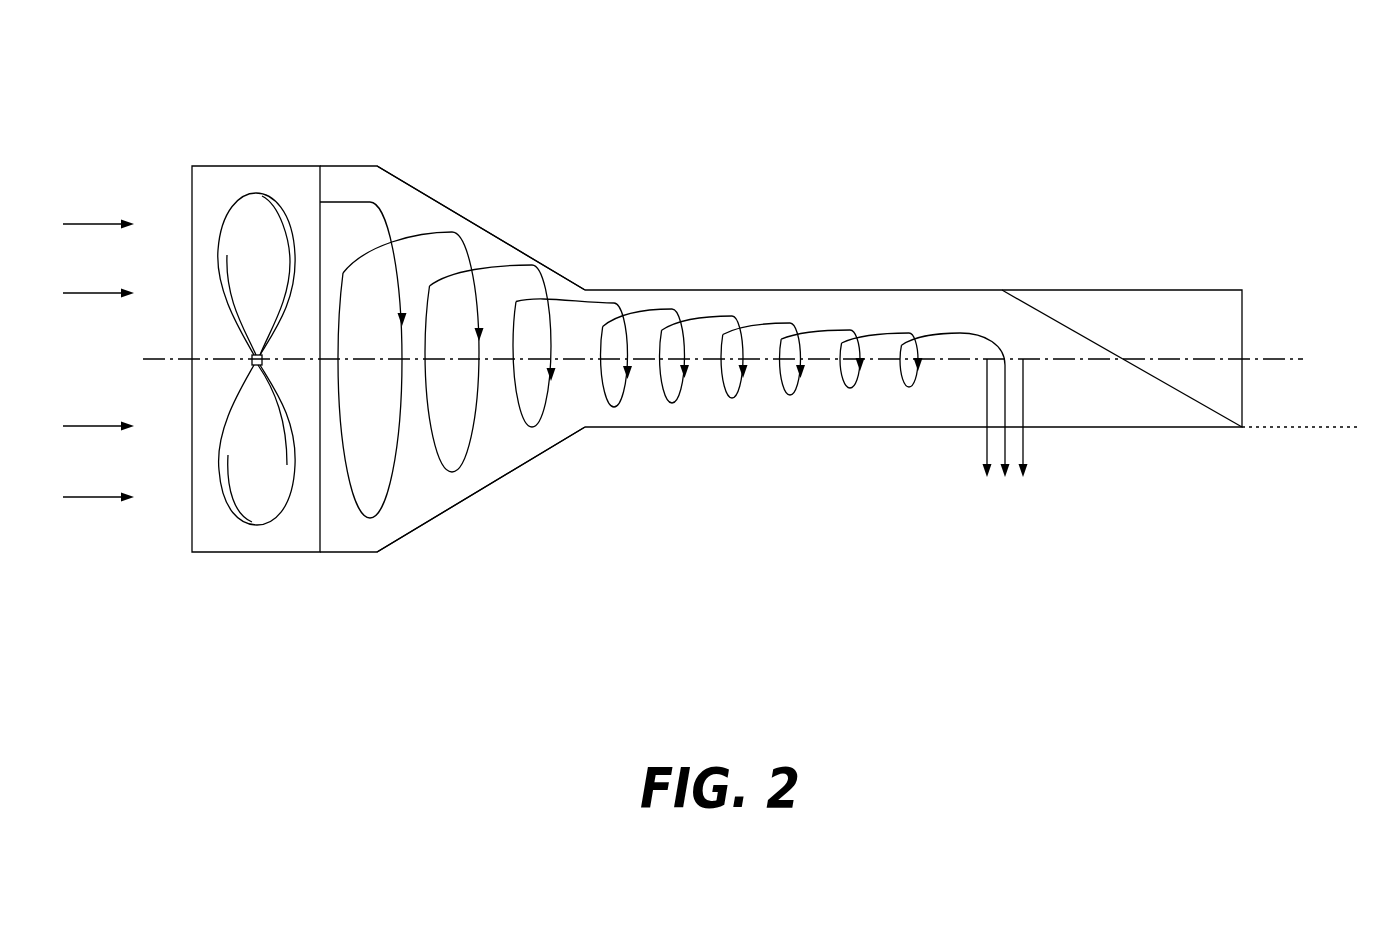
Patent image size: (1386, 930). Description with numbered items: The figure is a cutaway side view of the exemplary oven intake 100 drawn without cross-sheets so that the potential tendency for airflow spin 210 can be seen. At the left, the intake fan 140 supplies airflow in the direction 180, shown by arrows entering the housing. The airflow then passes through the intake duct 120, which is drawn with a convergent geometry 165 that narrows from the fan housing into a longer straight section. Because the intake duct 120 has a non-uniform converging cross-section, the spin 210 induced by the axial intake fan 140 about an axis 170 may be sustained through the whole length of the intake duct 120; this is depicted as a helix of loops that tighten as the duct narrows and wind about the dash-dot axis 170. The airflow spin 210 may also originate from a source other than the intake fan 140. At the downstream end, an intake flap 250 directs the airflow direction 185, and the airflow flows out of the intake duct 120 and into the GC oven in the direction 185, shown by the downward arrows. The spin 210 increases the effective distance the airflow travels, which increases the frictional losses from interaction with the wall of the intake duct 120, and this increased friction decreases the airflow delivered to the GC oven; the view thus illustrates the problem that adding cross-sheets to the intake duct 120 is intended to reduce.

The oven intake 100 is at (717, 296).
The intake duct 120 is at (741, 417).
The intake fan 140 is at (265, 190).
The convergent geometry 165 is at (619, 257).
The axis 170 is at (1276, 347).
The airflow direction (flow in) 180 is at (98, 329).
The airflow direction (flow out to oven) 185 is at (1003, 466).
The airflow spin 210 is at (446, 222).
The intake flap 250 is at (1095, 308).